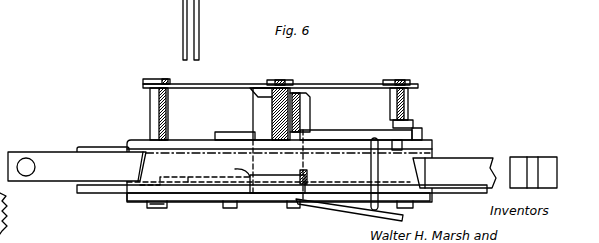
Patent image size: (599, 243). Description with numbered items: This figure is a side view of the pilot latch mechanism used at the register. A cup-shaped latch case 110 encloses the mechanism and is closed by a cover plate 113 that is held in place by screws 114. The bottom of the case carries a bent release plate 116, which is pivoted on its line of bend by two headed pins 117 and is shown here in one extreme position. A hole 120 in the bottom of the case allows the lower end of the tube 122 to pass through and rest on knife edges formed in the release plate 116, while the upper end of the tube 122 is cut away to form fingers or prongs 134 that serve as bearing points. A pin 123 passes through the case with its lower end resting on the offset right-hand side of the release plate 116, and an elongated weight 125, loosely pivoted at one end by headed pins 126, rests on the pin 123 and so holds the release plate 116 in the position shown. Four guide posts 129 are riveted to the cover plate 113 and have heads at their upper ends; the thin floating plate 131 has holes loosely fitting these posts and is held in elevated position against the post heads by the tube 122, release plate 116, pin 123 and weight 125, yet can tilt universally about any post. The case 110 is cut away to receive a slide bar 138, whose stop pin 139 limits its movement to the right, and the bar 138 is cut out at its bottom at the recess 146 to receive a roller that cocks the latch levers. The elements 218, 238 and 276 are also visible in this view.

The latch case 110 is at (103, 192).
The cover plate 113 is at (86, 146).
The screws 114 is at (152, 207).
The release plate 116 is at (228, 207).
The headed pins 117 is at (292, 207).
The hole 120 is at (308, 178).
The tube 122 is at (305, 110).
The pin 123 is at (432, 144).
The elongated weight 125 is at (232, 132).
The headed pins 126 is at (415, 118).
The guide posts 129 is at (153, 105).
The floating plate 131 is at (361, 85).
The fingers or prongs 134 is at (257, 92).
The slide bar 138 is at (60, 181).
The stop pin 139 is at (29, 158).
The recess 146 is at (186, 204).
The rod 218 is at (200, 25).
The rod 238 is at (182, 27).
The element 276 is at (470, 4).